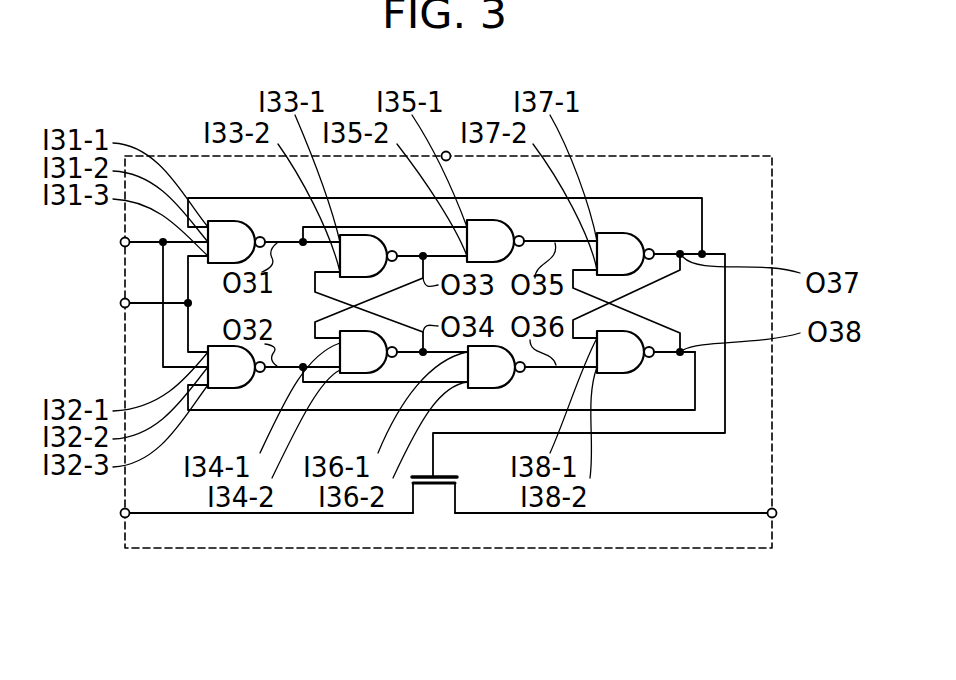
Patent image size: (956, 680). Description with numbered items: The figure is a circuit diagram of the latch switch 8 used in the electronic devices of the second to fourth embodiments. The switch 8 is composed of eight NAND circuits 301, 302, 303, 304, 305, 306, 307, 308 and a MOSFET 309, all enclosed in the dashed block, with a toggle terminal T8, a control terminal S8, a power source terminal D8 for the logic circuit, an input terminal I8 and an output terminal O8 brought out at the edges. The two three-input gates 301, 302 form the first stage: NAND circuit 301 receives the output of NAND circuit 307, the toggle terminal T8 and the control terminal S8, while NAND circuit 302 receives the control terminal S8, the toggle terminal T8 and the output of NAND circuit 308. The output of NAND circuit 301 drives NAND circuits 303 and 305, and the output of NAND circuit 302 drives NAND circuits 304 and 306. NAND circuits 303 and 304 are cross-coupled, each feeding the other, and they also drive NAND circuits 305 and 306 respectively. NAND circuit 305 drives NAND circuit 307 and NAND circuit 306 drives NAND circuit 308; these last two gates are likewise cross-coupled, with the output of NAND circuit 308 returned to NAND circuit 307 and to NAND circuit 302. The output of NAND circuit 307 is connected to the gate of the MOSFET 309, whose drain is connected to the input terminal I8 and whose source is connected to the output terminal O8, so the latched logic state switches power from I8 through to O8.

The switch 8 is at (773, 177).
The NAND circuit 301 is at (230, 238).
The NAND circuit 302 is at (230, 372).
The NAND circuit 303 is at (360, 253).
The NAND circuit 304 is at (360, 370).
The NAND circuit 305 is at (485, 237).
The NAND circuit 306 is at (490, 375).
The NAND circuit 307 is at (612, 252).
The NAND circuit 308 is at (615, 360).
The MOSFET 309 is at (433, 503).
The toggle terminal T8 is at (121, 242).
The control terminal S8 is at (121, 303).
The power source terminal D8 is at (446, 151).
The input terminal I8 is at (121, 517).
The output terminal O8 is at (776, 511).